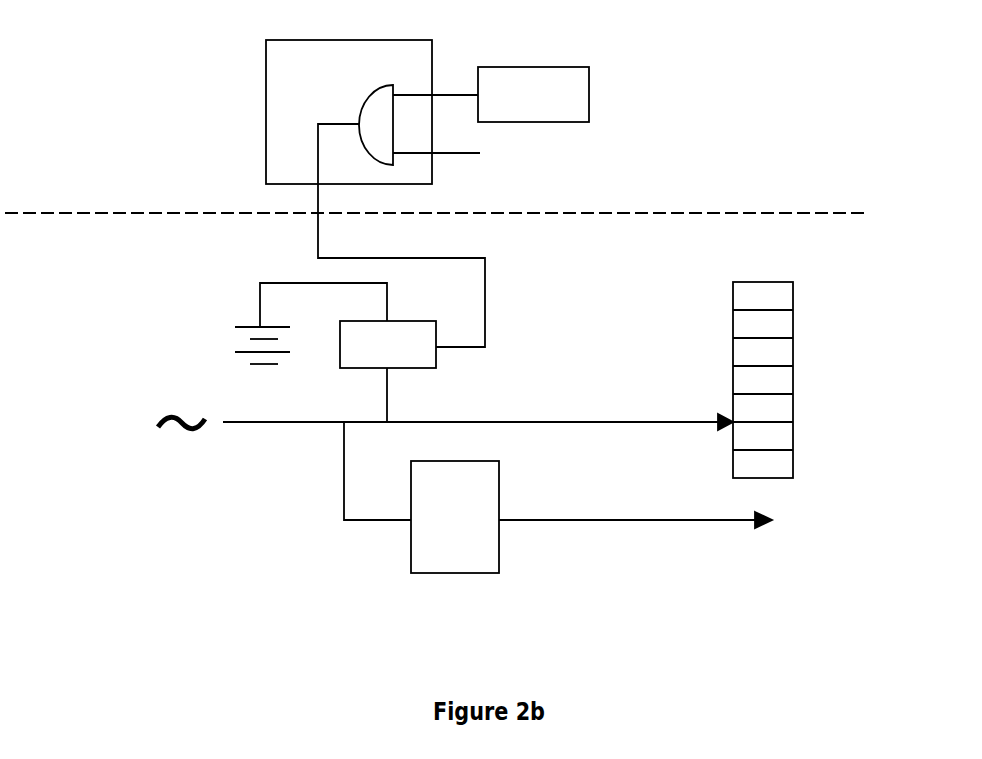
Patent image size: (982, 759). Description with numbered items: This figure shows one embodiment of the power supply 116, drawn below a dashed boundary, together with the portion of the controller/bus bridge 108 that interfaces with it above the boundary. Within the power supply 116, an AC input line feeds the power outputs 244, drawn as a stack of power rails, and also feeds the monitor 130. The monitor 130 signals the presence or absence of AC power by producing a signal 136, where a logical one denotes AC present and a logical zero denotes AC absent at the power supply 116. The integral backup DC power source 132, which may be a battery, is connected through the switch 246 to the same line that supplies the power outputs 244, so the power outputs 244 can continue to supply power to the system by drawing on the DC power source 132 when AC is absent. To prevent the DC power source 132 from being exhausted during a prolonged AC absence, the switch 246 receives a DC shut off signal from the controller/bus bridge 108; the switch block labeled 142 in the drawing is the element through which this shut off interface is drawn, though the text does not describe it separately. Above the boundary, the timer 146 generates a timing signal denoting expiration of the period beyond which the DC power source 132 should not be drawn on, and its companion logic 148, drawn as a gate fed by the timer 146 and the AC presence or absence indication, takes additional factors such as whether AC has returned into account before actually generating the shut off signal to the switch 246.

The controller/bus bridge 108 is at (88, 34).
The power supply 116 is at (62, 294).
The companion logic 148 is at (282, 125).
The timer 146 is at (577, 98).
The switch 142 is at (485, 297).
The integral backup DC power source 132 is at (283, 345).
The switch 246 is at (427, 353).
The power outputs 244 is at (793, 293).
The monitor 130 is at (468, 560).
The signal 136 is at (628, 522).